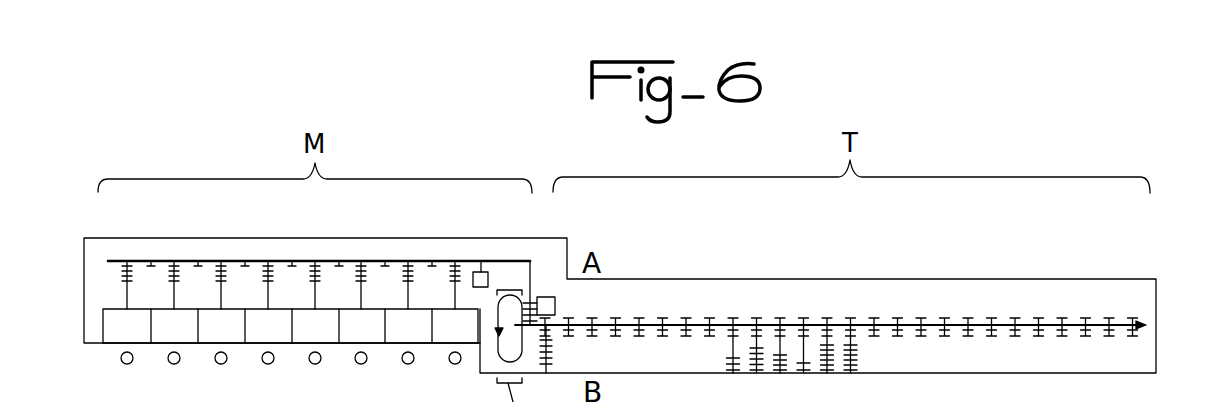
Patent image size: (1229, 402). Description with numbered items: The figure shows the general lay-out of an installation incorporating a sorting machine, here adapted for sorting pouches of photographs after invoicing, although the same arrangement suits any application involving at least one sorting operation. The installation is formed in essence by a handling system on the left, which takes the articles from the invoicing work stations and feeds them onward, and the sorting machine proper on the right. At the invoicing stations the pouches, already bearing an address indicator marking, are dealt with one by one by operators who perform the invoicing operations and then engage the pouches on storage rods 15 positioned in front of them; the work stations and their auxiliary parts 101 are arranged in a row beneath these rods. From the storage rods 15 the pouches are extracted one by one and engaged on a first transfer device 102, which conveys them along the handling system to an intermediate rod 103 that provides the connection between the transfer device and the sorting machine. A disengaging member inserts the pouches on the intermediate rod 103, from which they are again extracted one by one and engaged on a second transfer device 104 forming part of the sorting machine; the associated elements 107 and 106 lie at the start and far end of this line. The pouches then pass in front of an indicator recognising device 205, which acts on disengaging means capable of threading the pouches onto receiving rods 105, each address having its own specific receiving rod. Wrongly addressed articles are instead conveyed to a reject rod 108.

The storage rods 15 is at (176, 297).
The cell units 101 is at (182, 332).
The first transfer device 102 is at (353, 259).
The intermediate rod 103 is at (541, 262).
The transmission line 104 is at (700, 323).
The receiving rods 105 is at (793, 361).
The line termination 106 is at (1147, 324).
The valve unit 107 is at (498, 353).
The reject rod 108 is at (554, 356).
The indicator recognising device 205 is at (555, 306).